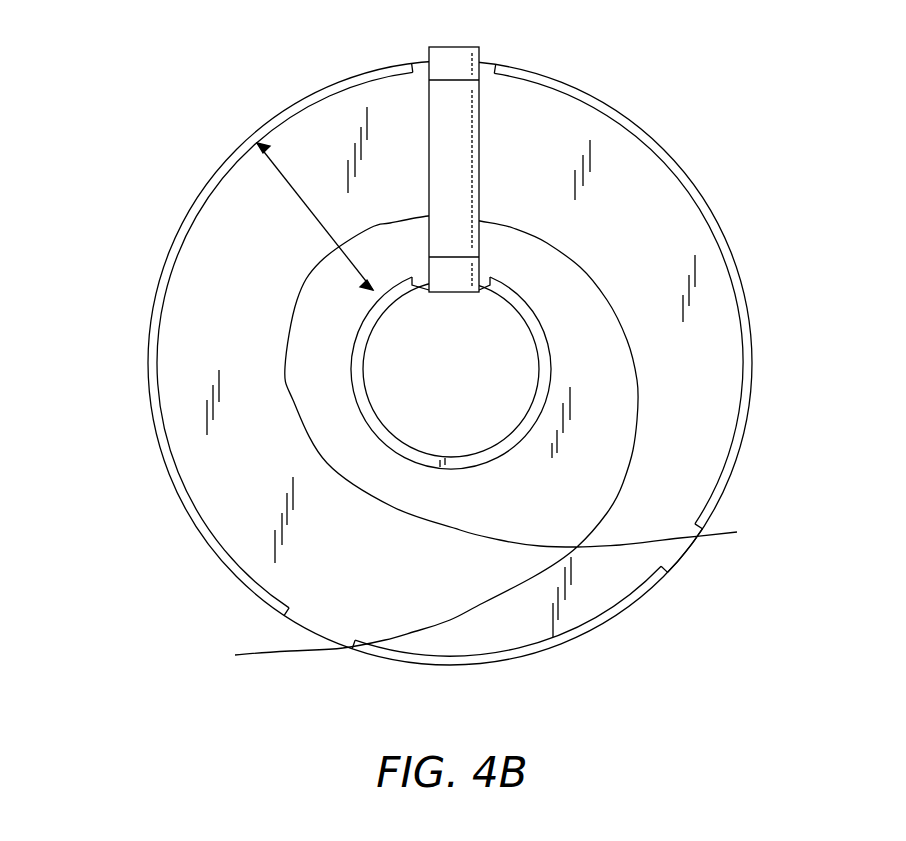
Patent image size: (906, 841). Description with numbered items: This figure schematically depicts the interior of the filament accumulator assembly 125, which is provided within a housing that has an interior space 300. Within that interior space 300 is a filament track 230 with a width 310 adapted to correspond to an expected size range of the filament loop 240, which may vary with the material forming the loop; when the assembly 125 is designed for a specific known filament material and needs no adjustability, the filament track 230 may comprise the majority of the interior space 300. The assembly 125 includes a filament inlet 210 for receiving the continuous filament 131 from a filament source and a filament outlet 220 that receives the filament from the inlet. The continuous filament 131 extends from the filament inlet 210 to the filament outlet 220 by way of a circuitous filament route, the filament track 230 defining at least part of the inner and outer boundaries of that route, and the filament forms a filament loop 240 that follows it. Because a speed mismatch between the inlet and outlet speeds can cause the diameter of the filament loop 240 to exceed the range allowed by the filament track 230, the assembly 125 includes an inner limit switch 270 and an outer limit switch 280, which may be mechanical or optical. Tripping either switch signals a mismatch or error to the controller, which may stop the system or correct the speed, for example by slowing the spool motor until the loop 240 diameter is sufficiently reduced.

The filament accumulator assembly 125 is at (98, 121).
The continuous filament 131 is at (715, 537).
The filament inlet 210 is at (683, 560).
The filament outlet 220 is at (357, 658).
The filament track 230 is at (212, 485).
The filament loop 240 is at (285, 355).
The inner limit switch 270 is at (483, 291).
The outer limit switch 280 is at (480, 52).
The interior space 300 is at (620, 165).
The width 310 is at (310, 215).